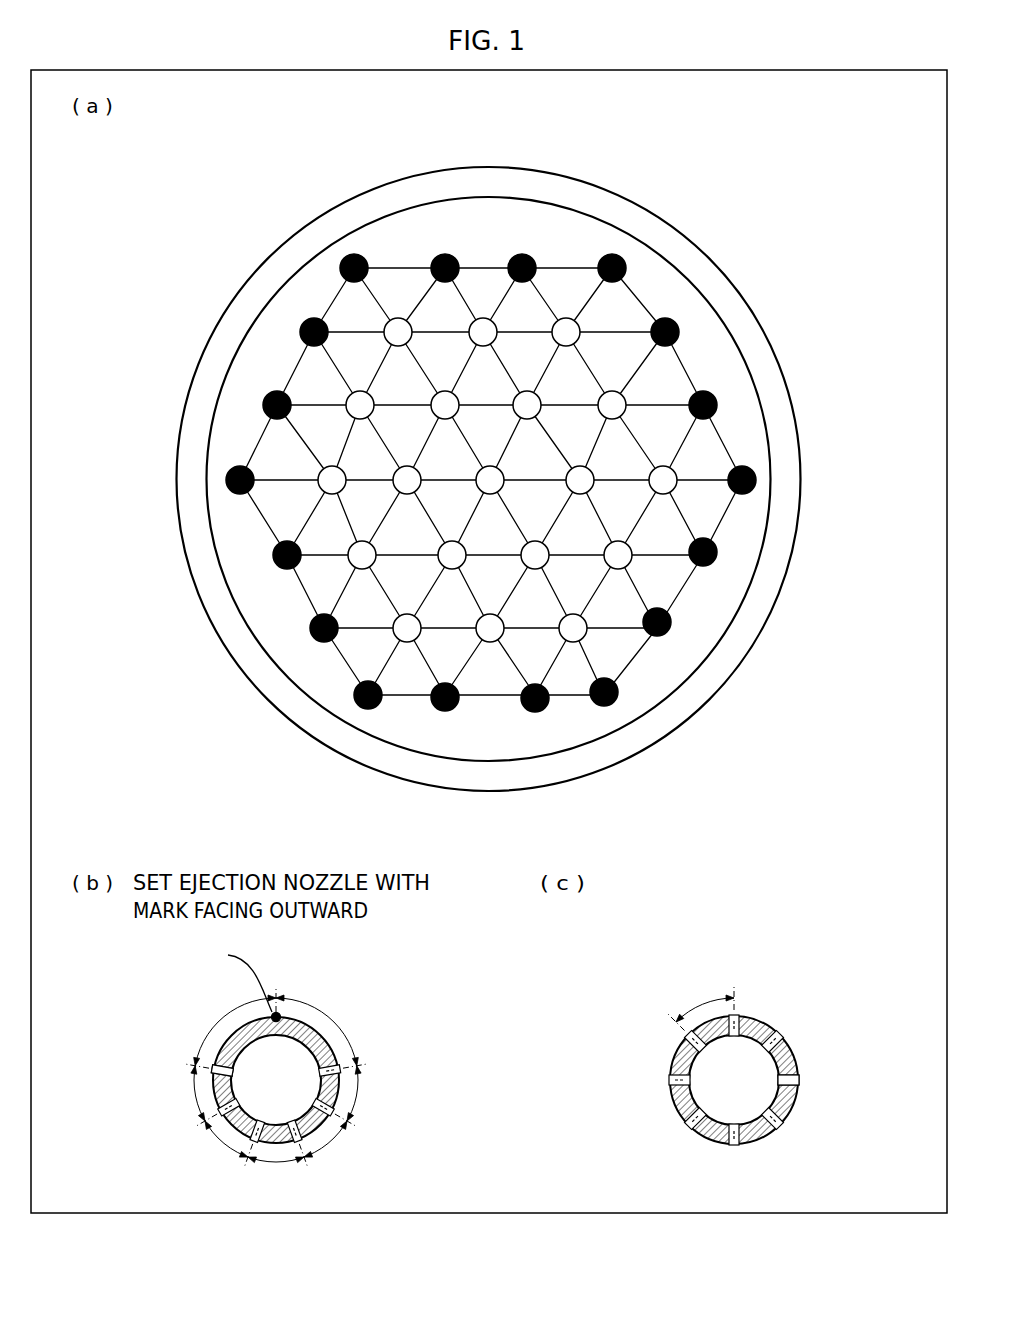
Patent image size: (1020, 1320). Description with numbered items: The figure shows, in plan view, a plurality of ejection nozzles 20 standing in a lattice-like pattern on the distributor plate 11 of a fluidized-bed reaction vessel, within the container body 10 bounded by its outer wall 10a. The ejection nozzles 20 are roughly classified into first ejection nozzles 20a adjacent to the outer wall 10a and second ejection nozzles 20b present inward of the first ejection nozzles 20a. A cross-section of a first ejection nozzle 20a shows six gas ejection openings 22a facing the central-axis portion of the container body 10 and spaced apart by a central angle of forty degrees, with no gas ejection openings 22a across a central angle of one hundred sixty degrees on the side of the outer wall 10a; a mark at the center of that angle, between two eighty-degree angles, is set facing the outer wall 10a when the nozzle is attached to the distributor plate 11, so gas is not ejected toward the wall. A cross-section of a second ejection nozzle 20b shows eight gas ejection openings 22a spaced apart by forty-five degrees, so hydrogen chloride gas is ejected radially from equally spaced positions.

The container body 10 is at (733, 674).
The outer wall 10a is at (773, 478).
The distributor plate 11 is at (600, 235).
The ejection nozzle 20 is at (500, 719).
The first ejection nozzle 20a is at (266, 399).
The second ejection nozzle 20b is at (622, 400).
The gas ejection opening 22a is at (216, 1057).